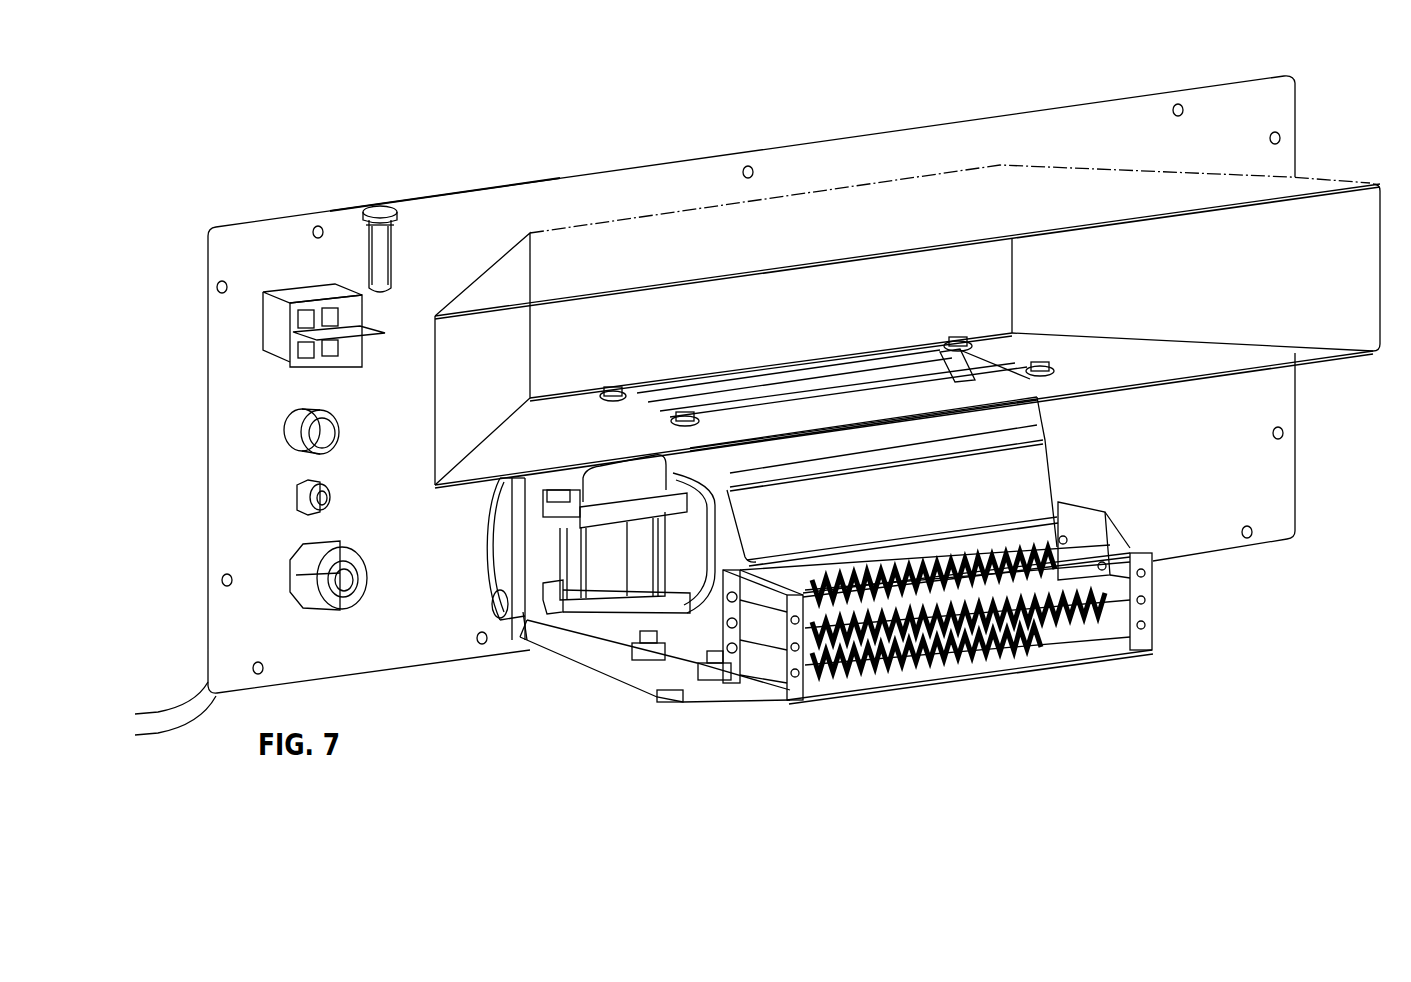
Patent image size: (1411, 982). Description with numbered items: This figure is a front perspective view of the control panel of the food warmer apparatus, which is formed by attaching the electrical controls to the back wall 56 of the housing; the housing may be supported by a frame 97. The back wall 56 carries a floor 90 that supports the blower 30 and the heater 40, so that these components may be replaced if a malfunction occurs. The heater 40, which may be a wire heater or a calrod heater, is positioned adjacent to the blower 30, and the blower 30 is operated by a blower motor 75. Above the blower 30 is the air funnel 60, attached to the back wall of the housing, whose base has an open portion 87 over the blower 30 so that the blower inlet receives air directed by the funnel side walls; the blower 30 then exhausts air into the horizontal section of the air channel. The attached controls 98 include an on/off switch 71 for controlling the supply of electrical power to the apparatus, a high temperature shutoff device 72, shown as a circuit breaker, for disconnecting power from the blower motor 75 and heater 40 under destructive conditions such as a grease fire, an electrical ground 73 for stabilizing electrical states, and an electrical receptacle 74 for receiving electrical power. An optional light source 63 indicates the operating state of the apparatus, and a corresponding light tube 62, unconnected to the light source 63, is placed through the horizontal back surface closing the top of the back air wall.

The blower 30 is at (1019, 488).
The heater 40 is at (1115, 595).
The back wall 56 is at (669, 162).
The air funnel 60 is at (986, 204).
The light tube 62 is at (366, 196).
The light source 63 is at (380, 276).
The on/off switch 71 is at (266, 321).
The high temperature shutoff device 72 is at (279, 433).
The electrical ground 73 is at (281, 505).
The electrical receptacle 74 is at (281, 577).
The blower motor 75 is at (613, 554).
The open portion 87 is at (771, 319).
The floor 90 is at (650, 673).
The frame 97 is at (478, 184).
The attached controls 98 is at (421, 612).